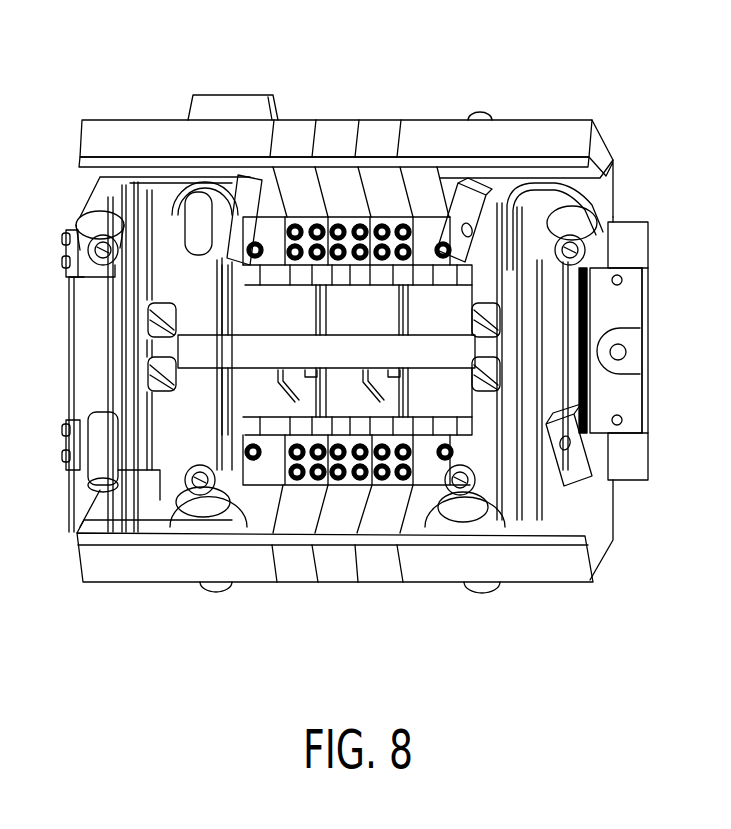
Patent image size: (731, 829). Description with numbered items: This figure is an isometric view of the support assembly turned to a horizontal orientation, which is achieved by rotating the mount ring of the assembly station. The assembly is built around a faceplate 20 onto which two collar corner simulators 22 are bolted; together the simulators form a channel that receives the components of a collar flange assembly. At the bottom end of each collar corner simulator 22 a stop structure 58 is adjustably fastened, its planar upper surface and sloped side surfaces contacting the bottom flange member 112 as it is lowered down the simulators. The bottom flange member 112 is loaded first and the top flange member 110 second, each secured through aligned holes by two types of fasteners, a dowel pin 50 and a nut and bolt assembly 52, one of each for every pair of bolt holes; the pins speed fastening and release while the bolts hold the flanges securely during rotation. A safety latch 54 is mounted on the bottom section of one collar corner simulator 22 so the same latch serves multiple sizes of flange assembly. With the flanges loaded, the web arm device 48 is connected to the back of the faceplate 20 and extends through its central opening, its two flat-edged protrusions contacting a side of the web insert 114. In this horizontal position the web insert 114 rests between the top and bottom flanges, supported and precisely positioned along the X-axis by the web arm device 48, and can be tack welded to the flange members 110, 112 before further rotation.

The faceplate 20 is at (633, 390).
The collar corner simulator 22 is at (375, 130).
The web arm device 48 is at (318, 328).
The dowel pin 50 is at (583, 463).
The nut and bolt assembly 52 is at (482, 593).
The safety latch 54 is at (240, 112).
The stop structure 58 is at (75, 268).
The top flange member 110 is at (588, 310).
The bottom flange member 112 is at (123, 350).
The web insert 114 is at (226, 368).